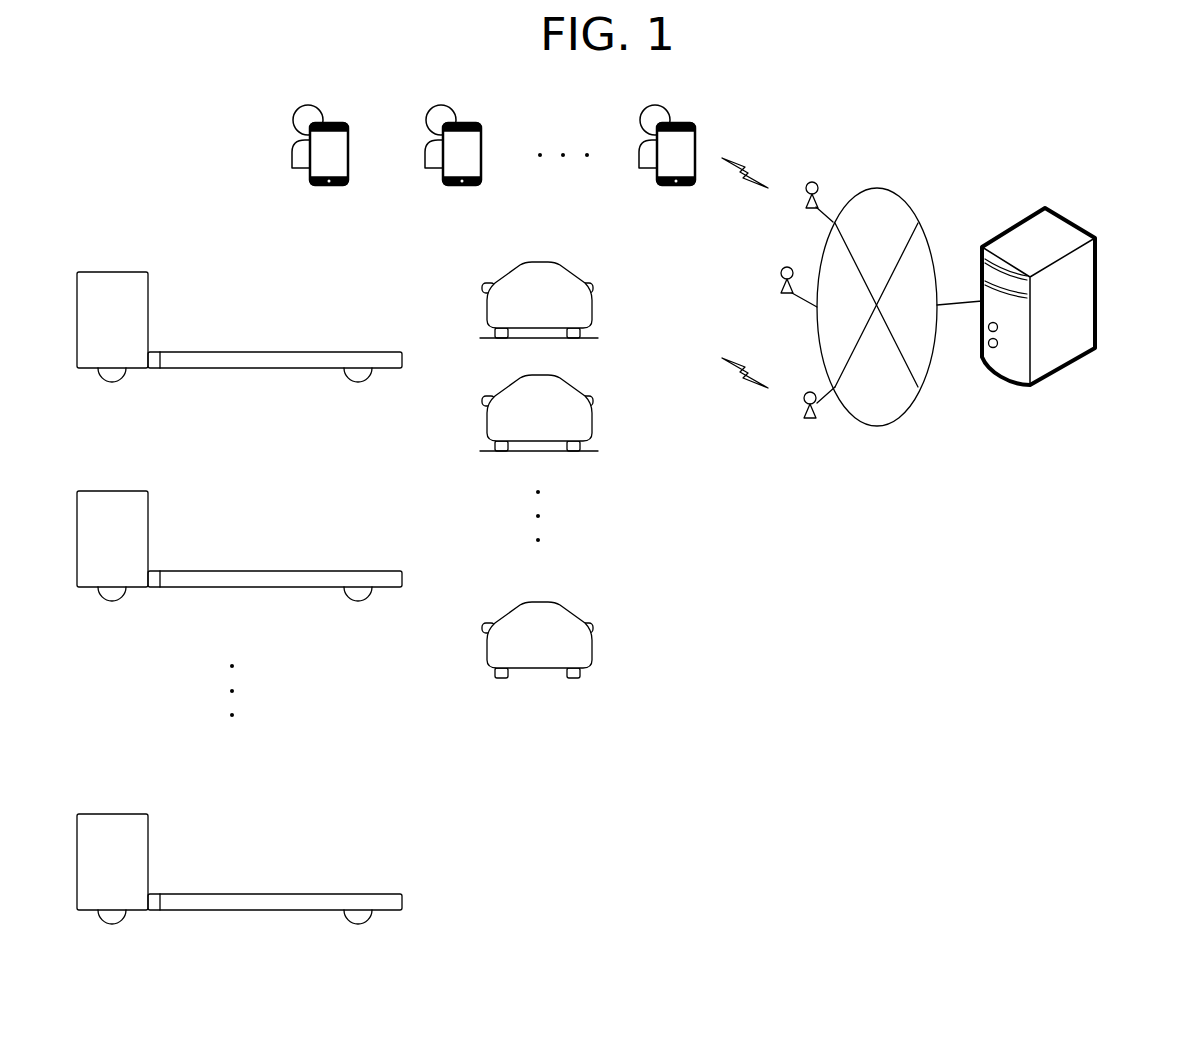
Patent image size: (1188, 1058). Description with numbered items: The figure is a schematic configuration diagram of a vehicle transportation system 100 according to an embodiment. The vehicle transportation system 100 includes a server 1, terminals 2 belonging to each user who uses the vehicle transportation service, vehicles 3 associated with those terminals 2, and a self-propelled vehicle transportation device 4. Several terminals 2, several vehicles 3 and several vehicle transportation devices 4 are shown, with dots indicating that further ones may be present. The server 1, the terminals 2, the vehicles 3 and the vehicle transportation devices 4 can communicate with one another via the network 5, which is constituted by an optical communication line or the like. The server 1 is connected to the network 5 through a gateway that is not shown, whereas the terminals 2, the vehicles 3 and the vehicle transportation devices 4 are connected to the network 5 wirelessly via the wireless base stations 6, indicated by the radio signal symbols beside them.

The server 1 is at (1082, 227).
The terminal 2 is at (340, 122).
The vehicle 3 is at (563, 263).
The self-propelled vehicle transportation device 4 is at (97, 272).
The network 5 is at (876, 188).
The wireless base station 6 is at (810, 182).
The vehicle transportation system 100 is at (997, 133).